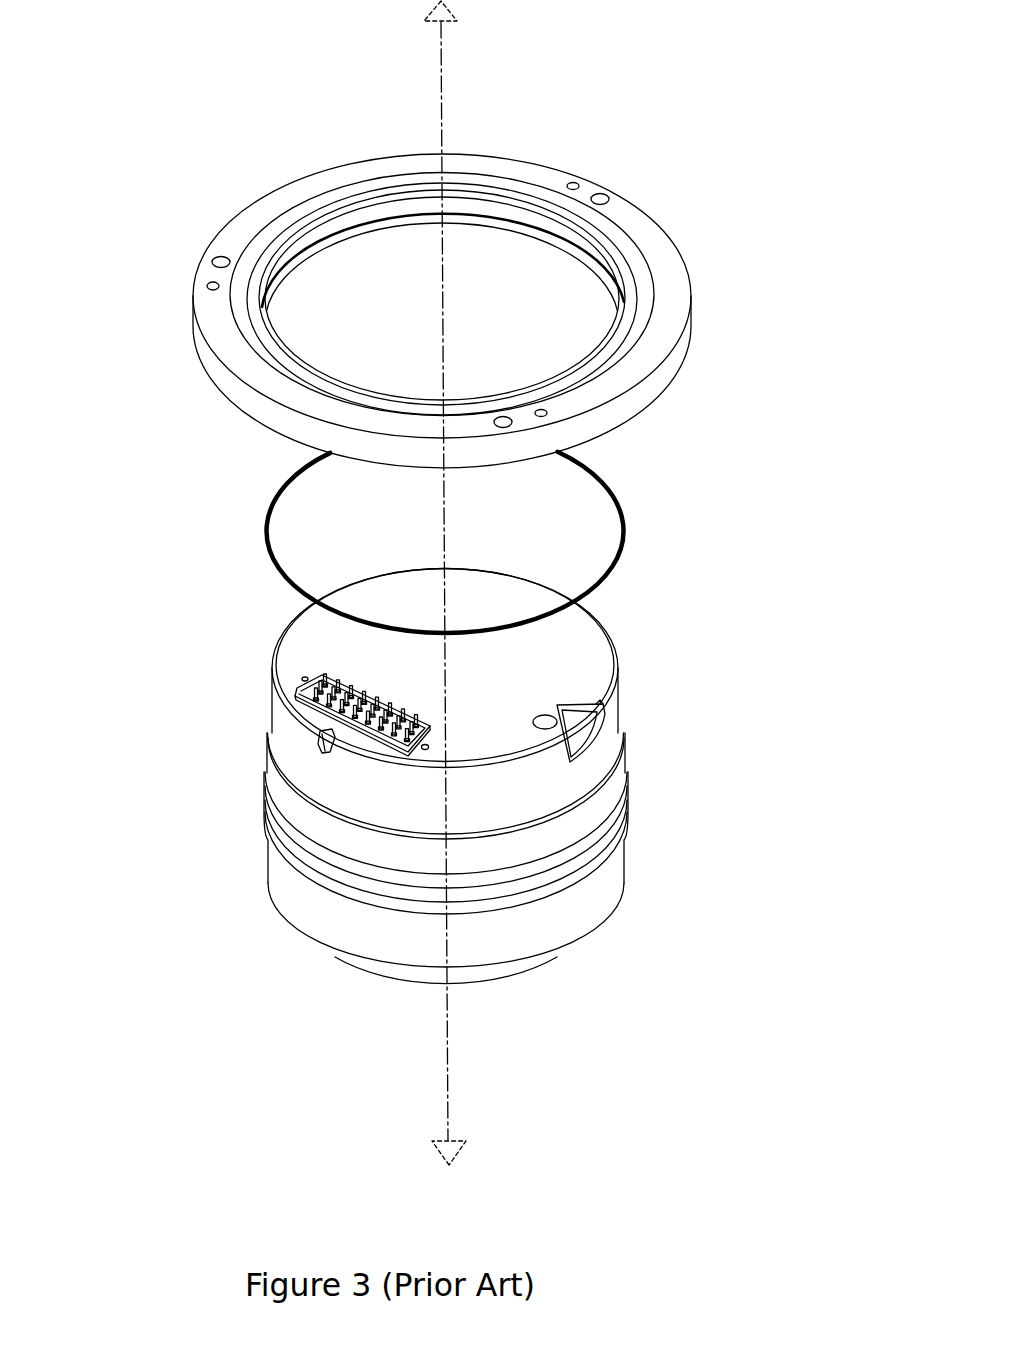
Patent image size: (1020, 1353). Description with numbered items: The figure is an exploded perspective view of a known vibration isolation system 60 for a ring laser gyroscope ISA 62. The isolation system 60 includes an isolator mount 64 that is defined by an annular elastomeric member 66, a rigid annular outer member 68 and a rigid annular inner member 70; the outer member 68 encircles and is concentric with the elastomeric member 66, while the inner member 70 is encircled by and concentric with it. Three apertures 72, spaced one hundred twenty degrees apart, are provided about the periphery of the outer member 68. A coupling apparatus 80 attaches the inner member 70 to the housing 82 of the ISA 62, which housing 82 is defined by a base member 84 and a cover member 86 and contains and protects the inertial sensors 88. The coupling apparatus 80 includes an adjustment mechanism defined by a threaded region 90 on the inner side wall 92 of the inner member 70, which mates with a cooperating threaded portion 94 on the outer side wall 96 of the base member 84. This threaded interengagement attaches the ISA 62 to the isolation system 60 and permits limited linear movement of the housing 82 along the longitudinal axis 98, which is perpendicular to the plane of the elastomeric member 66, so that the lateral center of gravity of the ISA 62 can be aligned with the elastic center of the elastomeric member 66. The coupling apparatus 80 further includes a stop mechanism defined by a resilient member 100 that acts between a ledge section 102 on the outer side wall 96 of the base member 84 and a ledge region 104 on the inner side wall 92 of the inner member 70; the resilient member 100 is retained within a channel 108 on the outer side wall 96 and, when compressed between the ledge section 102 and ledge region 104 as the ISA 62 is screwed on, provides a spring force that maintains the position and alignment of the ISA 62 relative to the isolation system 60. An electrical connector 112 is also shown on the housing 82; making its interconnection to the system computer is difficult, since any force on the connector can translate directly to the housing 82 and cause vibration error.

The vibration isolation system 60 is at (461, 298).
The ring laser gyroscope ISA 62 is at (455, 777).
The isolator mount 64 is at (442, 248).
The annular elastomeric member 66 is at (509, 276).
The rigid annular outer member 68 is at (505, 294).
The rigid annular inner member 70 is at (400, 382).
The apertures 72 is at (422, 313).
The coupling apparatus 80 is at (500, 567).
The housing 82 is at (516, 651).
The base member 84 is at (472, 952).
The cover member 86 is at (380, 649).
The inertial sensors 88 is at (649, 752).
The threaded region 90 is at (442, 298).
The inner side wall 92 is at (442, 297).
The threaded portion 94 is at (389, 823).
The outer side wall 96 is at (392, 837).
The longitudinal axis 98 is at (463, 583).
The resilient member 100 is at (510, 542).
The ledge section 102 is at (394, 877).
The ledge region 104 is at (443, 291).
The channel 108 is at (404, 912).
The electrical connector 112 is at (280, 683).